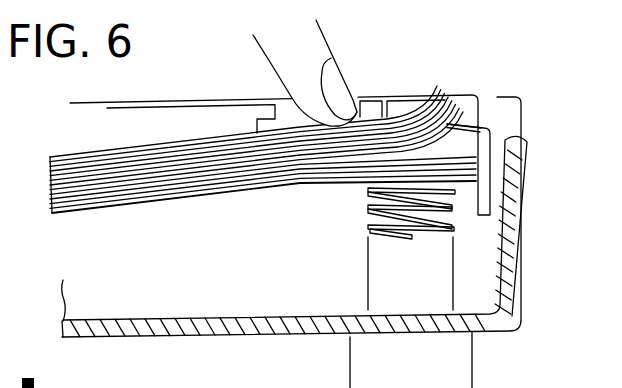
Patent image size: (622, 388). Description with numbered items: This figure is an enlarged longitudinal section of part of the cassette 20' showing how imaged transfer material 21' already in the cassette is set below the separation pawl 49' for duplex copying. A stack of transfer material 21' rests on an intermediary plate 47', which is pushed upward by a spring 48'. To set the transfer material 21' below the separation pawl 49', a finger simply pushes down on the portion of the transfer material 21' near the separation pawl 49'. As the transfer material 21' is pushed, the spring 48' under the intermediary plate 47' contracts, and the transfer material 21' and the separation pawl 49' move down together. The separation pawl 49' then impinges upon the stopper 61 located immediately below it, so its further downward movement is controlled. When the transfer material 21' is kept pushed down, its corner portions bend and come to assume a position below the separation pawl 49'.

The cassette 20' is at (294, 217).
The transfer material 21' is at (263, 138).
The intermediary plate 47' is at (264, 217).
The spring 48' is at (384, 218).
The separation pawl 49' is at (475, 94).
The stopper 61 is at (487, 217).